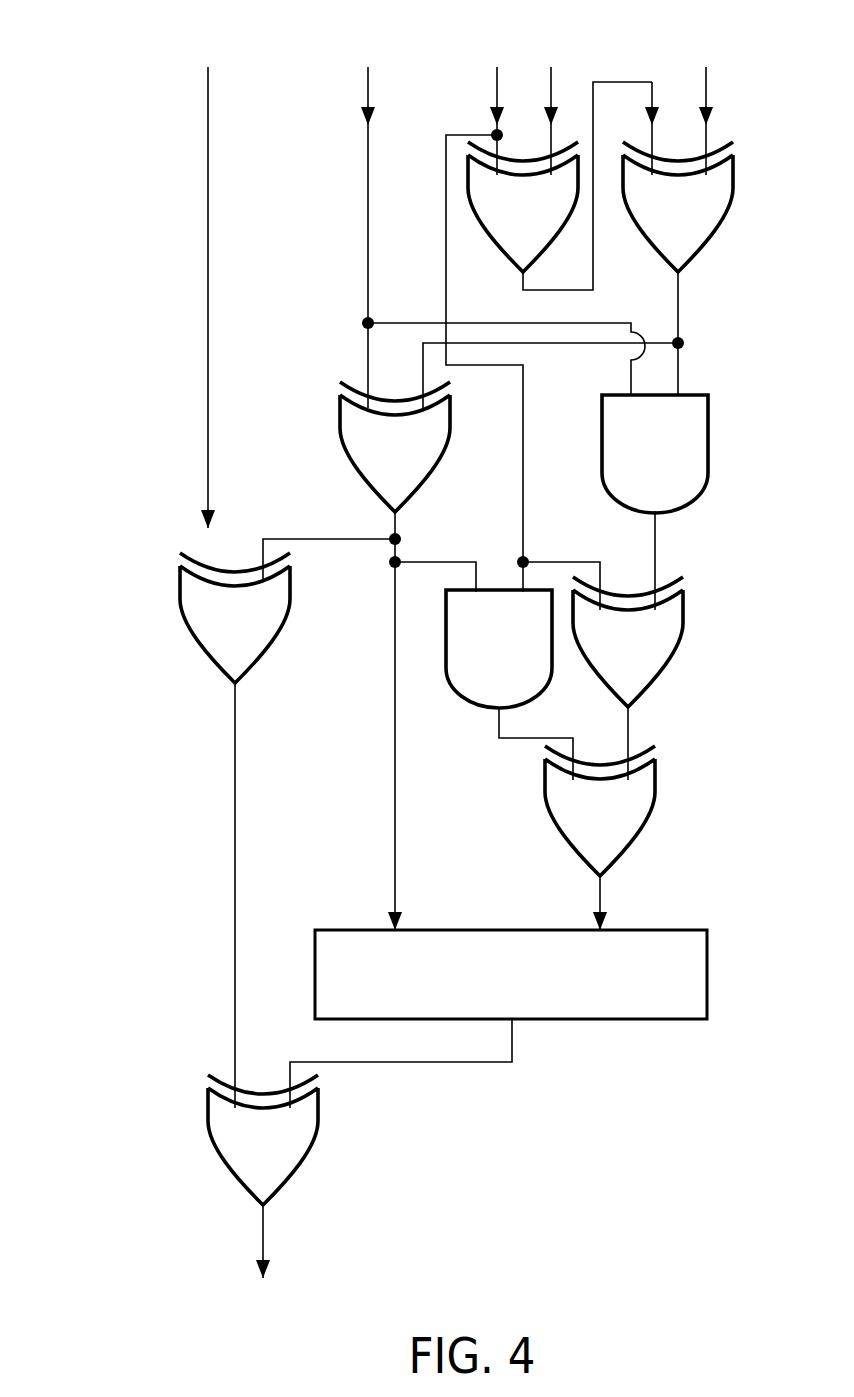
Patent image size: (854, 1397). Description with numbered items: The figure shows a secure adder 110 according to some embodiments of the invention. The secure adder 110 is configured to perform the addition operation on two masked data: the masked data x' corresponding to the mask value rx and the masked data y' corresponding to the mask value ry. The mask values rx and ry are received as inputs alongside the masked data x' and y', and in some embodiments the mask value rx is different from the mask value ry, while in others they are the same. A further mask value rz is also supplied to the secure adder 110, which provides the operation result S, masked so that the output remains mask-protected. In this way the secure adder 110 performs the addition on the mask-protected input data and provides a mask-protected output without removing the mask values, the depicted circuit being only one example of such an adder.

The secure adder 110 is at (66, 32).
The mask value rz is at (208, 278).
The masked data x' is at (368, 218).
The mask value rx is at (484, 310).
The mask value ry is at (551, 101).
The masked data y' is at (706, 101).
The operation result S is at (263, 1259).